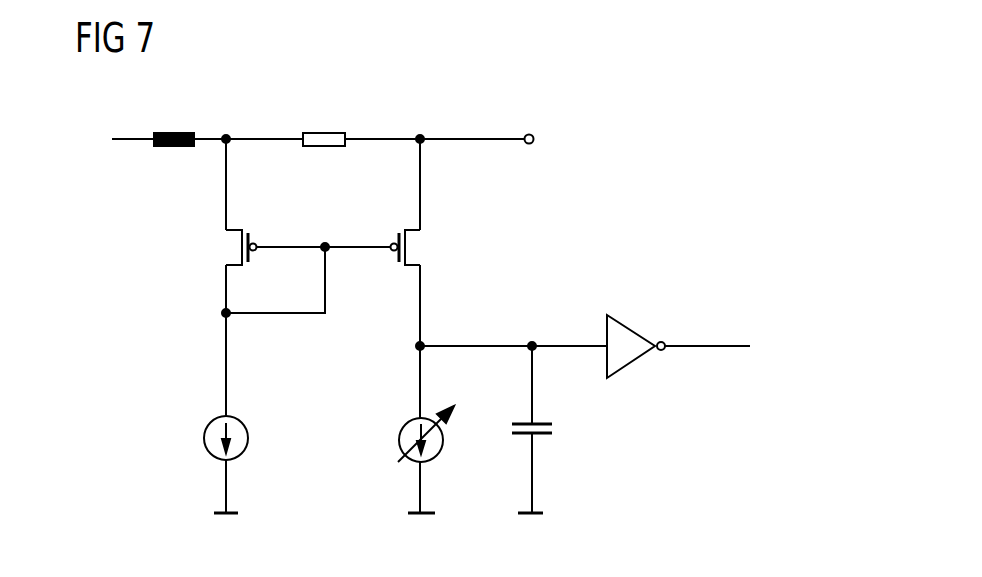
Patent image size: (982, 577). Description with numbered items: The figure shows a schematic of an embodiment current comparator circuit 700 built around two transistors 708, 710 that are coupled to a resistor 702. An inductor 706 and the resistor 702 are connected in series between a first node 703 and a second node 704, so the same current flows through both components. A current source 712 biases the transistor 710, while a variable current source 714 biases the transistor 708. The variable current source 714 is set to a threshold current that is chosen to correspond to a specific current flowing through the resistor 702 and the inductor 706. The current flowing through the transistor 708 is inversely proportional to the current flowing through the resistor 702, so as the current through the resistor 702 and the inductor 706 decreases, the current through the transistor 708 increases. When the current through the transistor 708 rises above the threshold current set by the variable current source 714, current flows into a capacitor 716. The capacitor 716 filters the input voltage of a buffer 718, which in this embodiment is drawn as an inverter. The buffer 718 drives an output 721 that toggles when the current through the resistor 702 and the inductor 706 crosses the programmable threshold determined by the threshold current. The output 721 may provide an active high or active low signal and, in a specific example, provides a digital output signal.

The current comparator circuit 700 is at (670, 156).
The resistor 702 is at (318, 131).
The first node 703 is at (130, 144).
The second node 704 is at (482, 142).
The inductor 706 is at (173, 131).
The transistor 708 is at (408, 247).
The transistor 710 is at (242, 247).
The current source 712 is at (248, 440).
The variable current source 714 is at (408, 420).
The capacitor 716 is at (540, 423).
The buffer 718 is at (632, 325).
The output 721 is at (712, 345).